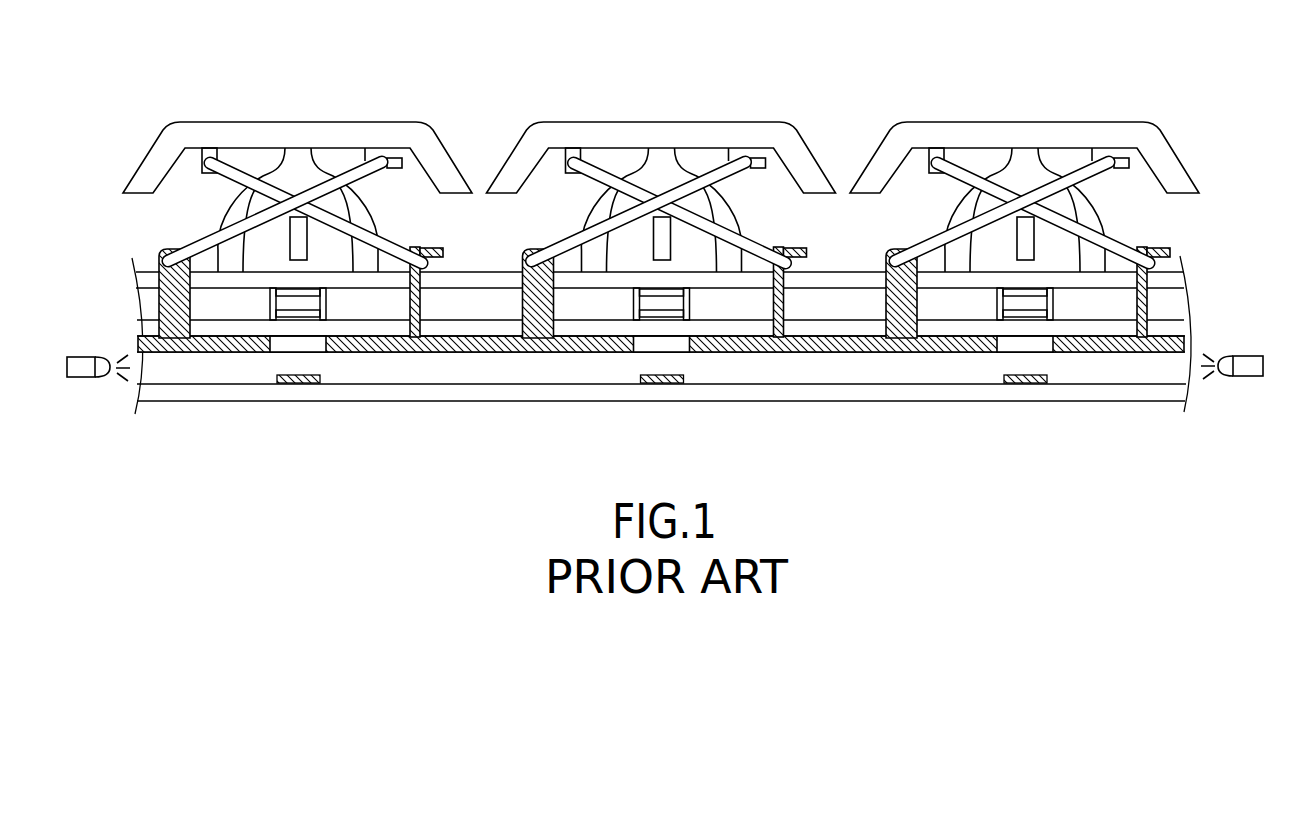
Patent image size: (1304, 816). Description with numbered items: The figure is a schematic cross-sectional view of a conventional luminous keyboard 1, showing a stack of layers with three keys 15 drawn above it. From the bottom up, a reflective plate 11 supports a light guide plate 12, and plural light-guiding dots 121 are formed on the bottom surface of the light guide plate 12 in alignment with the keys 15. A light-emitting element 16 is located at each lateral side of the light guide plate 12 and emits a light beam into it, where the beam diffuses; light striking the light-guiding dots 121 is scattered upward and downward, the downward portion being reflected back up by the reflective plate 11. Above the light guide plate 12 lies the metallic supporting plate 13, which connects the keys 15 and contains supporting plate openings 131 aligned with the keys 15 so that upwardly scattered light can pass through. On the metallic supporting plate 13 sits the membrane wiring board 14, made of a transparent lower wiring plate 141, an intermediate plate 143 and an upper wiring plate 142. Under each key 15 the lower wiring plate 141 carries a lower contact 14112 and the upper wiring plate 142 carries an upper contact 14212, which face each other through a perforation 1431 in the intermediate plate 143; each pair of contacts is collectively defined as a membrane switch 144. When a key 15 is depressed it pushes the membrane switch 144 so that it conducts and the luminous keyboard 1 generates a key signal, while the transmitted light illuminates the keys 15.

The luminous keyboard 1 is at (1058, 53).
The reflective plate 11 is at (193, 392).
The light guide plate 12 is at (391, 375).
The light-guiding dots 121 is at (312, 381).
The metallic supporting plate 13 is at (160, 336).
The supporting plate openings 131 is at (298, 344).
The membrane wiring board 14 is at (718, 276).
The lower wiring plate 141 is at (1185, 320).
The upper wiring plate 142 is at (1168, 272).
The intermediate plate 143 is at (1172, 300).
The membrane switch 144 is at (1014, 395).
The upper contacts 14212 is at (1023, 295).
The lower contacts 14112 is at (1025, 382).
The perforations 1431 is at (1025, 303).
The keys 15 is at (233, 97).
The light-emitting element 16 is at (72, 373).